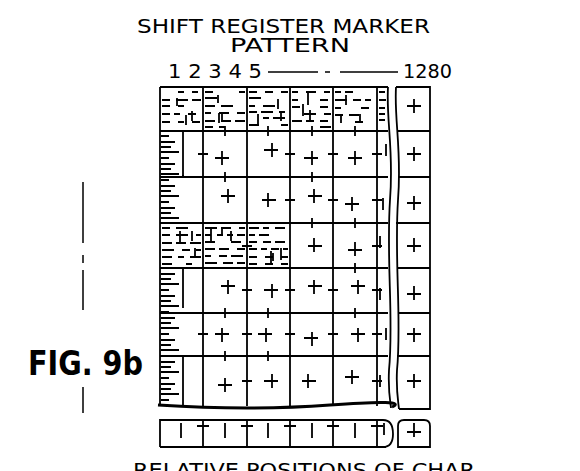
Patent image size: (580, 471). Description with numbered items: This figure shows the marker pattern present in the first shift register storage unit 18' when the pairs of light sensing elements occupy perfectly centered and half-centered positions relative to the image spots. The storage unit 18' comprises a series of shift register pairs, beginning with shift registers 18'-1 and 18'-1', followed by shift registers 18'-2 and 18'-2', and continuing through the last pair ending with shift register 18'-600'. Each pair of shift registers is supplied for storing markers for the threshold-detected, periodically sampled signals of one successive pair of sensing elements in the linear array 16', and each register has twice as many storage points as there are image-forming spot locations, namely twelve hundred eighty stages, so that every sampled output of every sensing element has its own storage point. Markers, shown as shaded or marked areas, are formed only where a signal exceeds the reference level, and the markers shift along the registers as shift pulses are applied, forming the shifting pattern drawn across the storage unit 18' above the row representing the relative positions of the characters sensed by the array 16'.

The first shift register storage unit 18' is at (242, 215).
The shift register 18'-1 is at (220, 100).
The shift register 18'-1' is at (220, 120).
The shift register 18'-2 is at (119, 144).
The shift register 18'-2' is at (119, 165).
The shift register 18'-600' is at (242, 433).
The linear array of sensing elements 16' is at (254, 459).